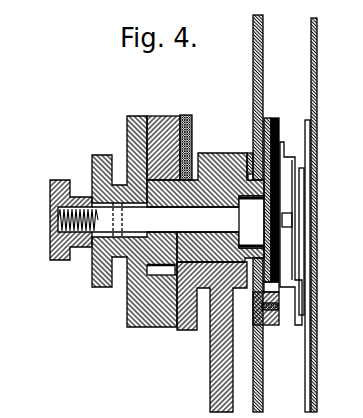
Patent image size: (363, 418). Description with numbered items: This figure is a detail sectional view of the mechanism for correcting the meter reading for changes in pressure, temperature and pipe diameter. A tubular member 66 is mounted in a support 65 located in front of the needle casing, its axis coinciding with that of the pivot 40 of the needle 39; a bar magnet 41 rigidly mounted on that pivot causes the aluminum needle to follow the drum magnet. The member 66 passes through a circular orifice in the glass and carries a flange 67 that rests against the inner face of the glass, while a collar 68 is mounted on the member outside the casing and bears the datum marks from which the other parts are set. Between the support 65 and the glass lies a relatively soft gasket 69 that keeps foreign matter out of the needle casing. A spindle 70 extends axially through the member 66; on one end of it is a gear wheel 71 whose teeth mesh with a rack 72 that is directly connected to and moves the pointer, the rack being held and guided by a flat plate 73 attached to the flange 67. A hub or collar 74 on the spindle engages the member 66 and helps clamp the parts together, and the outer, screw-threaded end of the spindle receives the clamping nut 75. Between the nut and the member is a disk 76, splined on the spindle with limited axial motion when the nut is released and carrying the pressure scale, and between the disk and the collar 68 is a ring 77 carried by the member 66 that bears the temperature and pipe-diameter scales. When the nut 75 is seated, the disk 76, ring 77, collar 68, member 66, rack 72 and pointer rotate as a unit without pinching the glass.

The needle 39 is at (303, 377).
The pivot 40 is at (295, 228).
The bar magnet 41 is at (302, 182).
The support 65 is at (215, 362).
The tubular member 66 is at (203, 198).
The flange 67 is at (266, 118).
The collar 68 is at (195, 120).
The gasket 69 is at (250, 162).
The spindle 70 is at (165, 220).
The gear wheel 71 is at (279, 286).
The rack 72 is at (277, 121).
The flat plate 73 is at (270, 326).
The hub or collar 74 is at (251, 222).
The clamping nut 75 is at (50, 193).
The disk 76 is at (101, 162).
The ring 77 is at (159, 129).